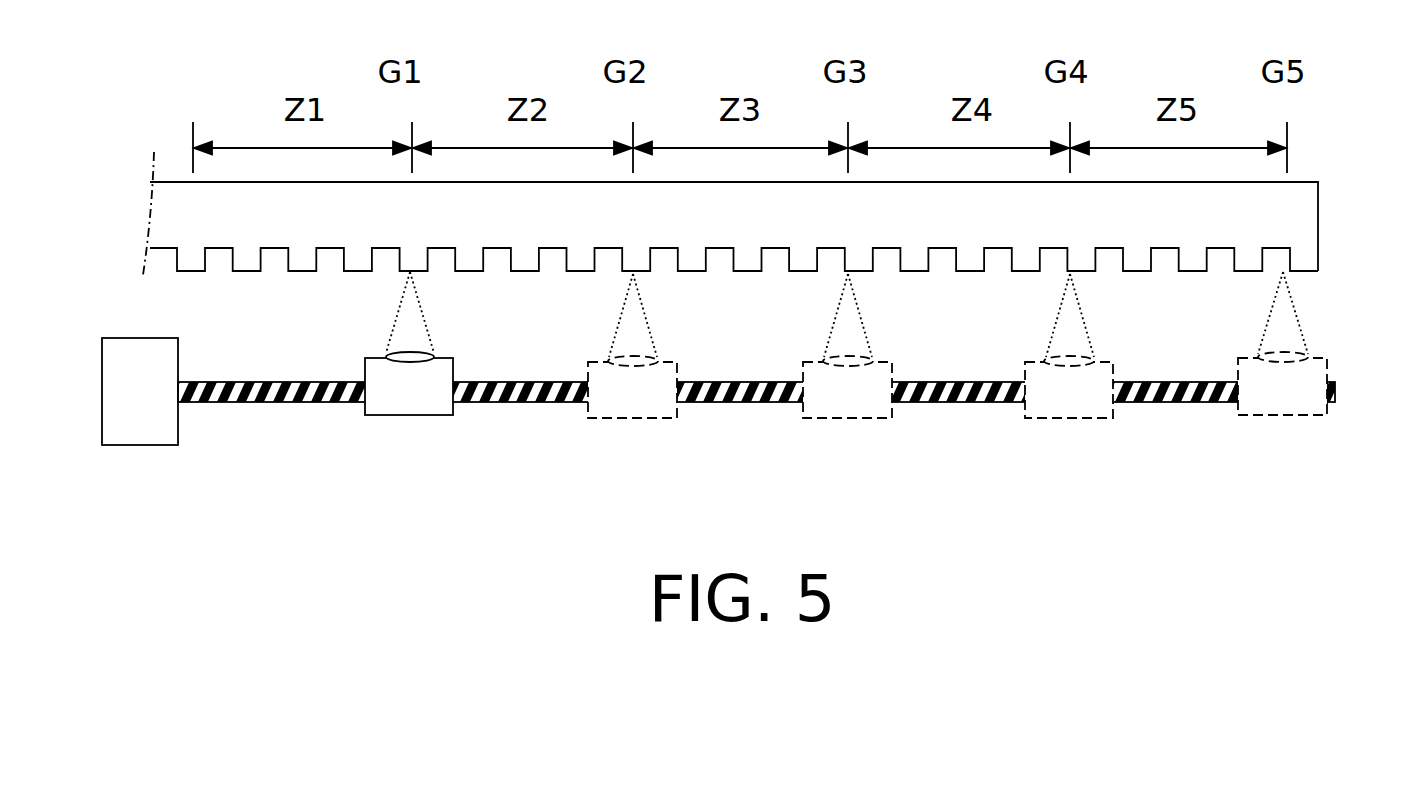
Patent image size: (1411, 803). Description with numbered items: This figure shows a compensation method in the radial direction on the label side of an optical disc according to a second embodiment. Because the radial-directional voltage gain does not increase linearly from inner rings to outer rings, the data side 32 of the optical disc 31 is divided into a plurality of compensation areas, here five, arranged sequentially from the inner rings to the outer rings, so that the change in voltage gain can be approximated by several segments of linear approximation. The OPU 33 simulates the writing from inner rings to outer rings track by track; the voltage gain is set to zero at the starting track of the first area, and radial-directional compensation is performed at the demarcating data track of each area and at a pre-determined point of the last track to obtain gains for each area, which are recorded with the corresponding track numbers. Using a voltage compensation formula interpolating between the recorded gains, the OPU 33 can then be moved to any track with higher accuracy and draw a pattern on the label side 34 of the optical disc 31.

The optical disc 31 is at (173, 160).
The data side 32 is at (970, 273).
The OPU 33 is at (418, 415).
The label side 34 is at (1303, 180).